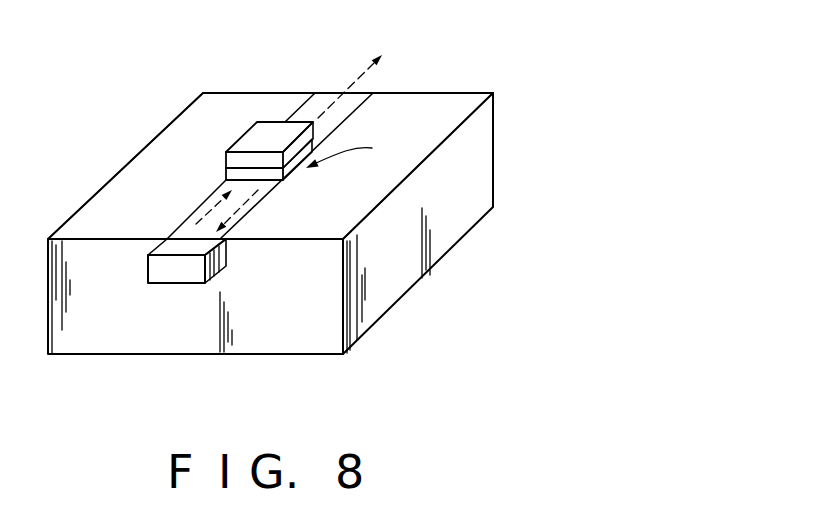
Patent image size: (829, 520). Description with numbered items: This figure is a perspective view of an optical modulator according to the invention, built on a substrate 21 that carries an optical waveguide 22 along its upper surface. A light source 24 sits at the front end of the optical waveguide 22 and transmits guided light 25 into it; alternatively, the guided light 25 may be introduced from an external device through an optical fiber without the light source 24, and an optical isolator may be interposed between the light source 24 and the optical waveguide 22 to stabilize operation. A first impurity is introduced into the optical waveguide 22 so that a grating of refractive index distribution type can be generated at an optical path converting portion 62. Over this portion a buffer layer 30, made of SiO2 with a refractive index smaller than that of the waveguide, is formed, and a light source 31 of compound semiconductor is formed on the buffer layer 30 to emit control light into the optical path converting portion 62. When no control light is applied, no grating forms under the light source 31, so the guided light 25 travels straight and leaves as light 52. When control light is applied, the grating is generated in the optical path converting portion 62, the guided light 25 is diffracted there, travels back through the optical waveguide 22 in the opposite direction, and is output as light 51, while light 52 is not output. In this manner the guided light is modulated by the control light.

The substrate 21 is at (92, 349).
The optical waveguide 22 is at (177, 225).
The light source 24 is at (177, 284).
The guided light 25 is at (213, 208).
The buffer layer 30 is at (226, 171).
The light source 31 is at (267, 126).
The light 51 is at (244, 205).
The light 52 is at (355, 82).
The optical path converting portion 62 is at (356, 151).